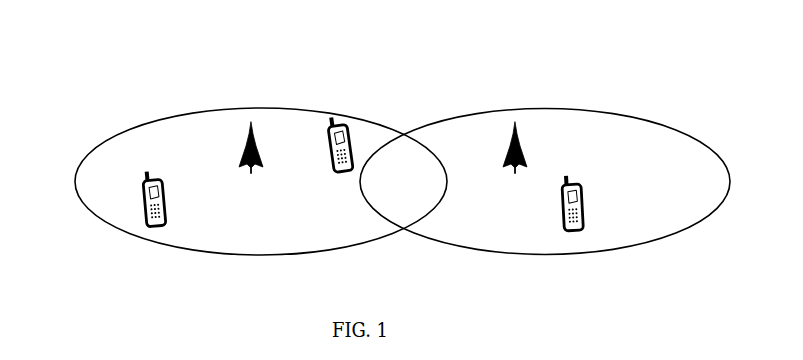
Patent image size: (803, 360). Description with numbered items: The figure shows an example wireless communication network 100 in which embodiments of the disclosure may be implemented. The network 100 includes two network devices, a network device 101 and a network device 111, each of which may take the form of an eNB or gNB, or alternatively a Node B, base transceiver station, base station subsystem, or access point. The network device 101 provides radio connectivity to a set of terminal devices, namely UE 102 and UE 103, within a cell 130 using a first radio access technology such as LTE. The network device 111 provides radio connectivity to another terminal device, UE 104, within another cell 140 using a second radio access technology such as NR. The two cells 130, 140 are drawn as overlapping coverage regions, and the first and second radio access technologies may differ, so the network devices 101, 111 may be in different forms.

The wireless communication network 100 is at (214, 37).
The cell 130 is at (122, 136).
The cell 140 is at (632, 113).
The network device 101 is at (252, 178).
The network device 111 is at (522, 128).
The UE 102 is at (343, 122).
The UE 103 is at (163, 188).
The UE 104 is at (578, 183).